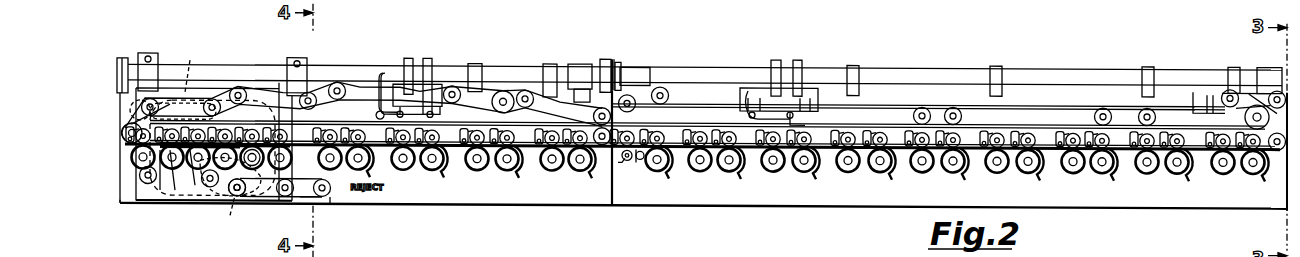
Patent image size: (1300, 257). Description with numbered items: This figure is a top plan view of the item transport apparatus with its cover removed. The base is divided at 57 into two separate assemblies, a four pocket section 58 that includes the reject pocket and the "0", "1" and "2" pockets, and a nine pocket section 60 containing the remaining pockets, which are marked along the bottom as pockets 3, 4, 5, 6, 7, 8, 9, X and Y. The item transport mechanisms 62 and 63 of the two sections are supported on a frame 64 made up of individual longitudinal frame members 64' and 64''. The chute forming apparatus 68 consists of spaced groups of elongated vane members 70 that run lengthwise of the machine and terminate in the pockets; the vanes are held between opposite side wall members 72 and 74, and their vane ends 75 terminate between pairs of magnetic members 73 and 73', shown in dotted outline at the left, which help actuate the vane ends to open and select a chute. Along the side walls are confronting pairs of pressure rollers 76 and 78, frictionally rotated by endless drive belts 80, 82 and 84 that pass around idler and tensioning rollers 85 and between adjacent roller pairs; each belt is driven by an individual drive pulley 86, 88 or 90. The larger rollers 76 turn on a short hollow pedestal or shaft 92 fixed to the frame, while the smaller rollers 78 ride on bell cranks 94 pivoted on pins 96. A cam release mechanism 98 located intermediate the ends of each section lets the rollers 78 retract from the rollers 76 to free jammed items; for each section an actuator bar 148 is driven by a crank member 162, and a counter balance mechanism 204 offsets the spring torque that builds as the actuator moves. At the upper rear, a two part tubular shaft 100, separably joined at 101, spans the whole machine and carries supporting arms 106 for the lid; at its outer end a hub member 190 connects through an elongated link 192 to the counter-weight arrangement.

The nine pocket section 60 is at (905, 62).
The two part tubular shaft 100 is at (447, 64).
The supporting arm 106 is at (148, 58).
The four pocket section 58 is at (492, 60).
The cam release mechanism 98 is at (425, 50).
The counter balance mechanism 204 is at (404, 60).
The endless drive belt 80 is at (358, 104).
The idler and tensioning roller 85 is at (506, 88).
The crank member 162 is at (580, 84).
The division point of base 57 is at (606, 57).
The elongated link 192 is at (613, 57).
The hub member 190 is at (622, 65).
The shaft joint 101 is at (628, 78).
The actuator bar 148 is at (258, 104).
The magnetic member 73 is at (192, 65).
The magnetic member 73' is at (224, 214).
The bell crank 94 is at (318, 127).
The pin 96 is at (462, 125).
The pressure roller 78 is at (368, 127).
The drive pulley 88 is at (120, 203).
The drive pulley 90 is at (158, 190).
The vane end 75 is at (186, 170).
The chute forming apparatus 68 is at (247, 170).
The endless drive belt 82 is at (328, 196).
The vane member 70 is at (604, 165).
The side wall member 72 is at (712, 165).
The side wall member 74 is at (637, 164).
The pressure roller 76 is at (404, 169).
The item transport mechanism 62 is at (500, 176).
The item transport mechanism 63 is at (870, 175).
The short hollow pedestal or shaft 92 is at (552, 170).
The longitudinal frame member 64' is at (366, 216).
The frame 64 is at (686, 219).
The longitudinal frame member 64'' is at (1023, 219).
The endless drive belt 84 is at (987, 103).
The drive pulley 86 is at (1248, 117).
The pocket 0 is at (440, 186).
The pocket 1 is at (512, 187).
The pocket 2 is at (590, 187).
The station 3 is at (663, 188).
The station 4 is at (738, 189).
The station 5 is at (813, 189).
The station 6 is at (887, 191).
The station 7 is at (962, 191).
The station 8 is at (1038, 190).
The station 9 is at (1110, 191).
The station X is at (1185, 191).
The station Y is at (1262, 191).